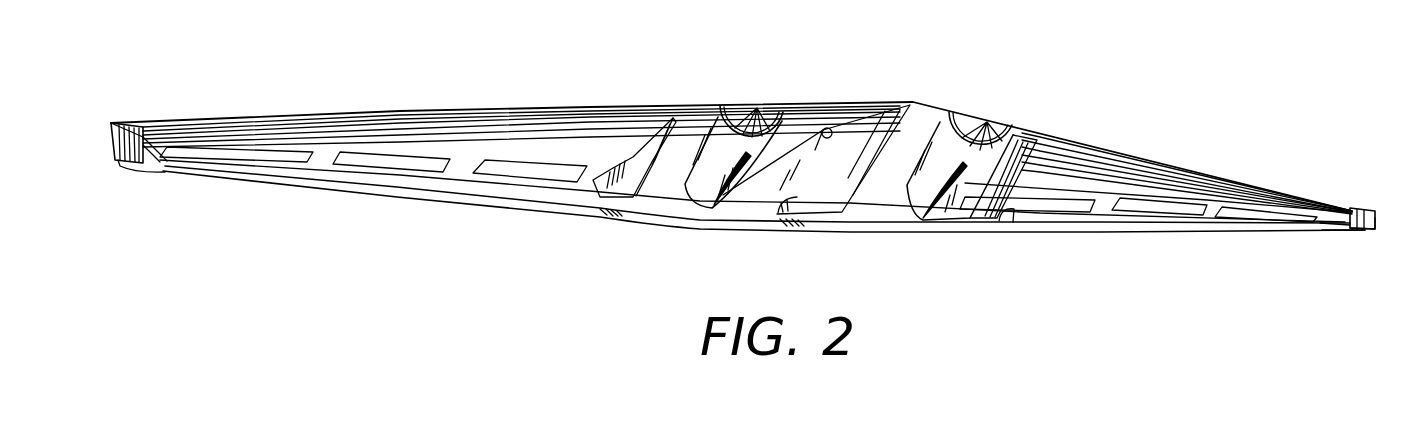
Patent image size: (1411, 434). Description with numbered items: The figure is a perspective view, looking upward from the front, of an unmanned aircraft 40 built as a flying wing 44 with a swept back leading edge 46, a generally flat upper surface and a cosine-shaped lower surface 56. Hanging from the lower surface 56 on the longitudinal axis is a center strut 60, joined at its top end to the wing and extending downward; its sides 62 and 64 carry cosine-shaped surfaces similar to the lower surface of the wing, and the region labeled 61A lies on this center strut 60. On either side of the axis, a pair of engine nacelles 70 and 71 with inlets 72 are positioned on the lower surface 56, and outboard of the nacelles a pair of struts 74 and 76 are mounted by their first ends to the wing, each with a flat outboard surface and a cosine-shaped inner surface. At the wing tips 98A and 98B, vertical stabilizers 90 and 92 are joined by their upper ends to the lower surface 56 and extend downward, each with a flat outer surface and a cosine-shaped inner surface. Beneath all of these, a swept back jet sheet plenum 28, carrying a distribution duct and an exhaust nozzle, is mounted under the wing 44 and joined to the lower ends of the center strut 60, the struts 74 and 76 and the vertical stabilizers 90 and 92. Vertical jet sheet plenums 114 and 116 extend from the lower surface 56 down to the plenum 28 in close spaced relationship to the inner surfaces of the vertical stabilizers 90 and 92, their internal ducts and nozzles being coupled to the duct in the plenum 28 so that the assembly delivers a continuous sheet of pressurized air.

The unmanned aircraft 40 is at (1063, 48).
The swept back jet sheet plenum 28 is at (358, 190).
The flying wing 44 is at (401, 113).
The swept back leading edge 46 is at (535, 110).
The lower surface 56 is at (290, 127).
The center strut 60 is at (790, 205).
The aperture 61A is at (828, 128).
The side of center strut 62 is at (877, 107).
The side of center strut 64 is at (936, 117).
The engine nacelle 70 is at (712, 127).
The engine nacelle 71 is at (992, 130).
The inlet 72 is at (762, 110).
The strut 74 is at (625, 193).
The strut 76 is at (1003, 214).
The vertical stabilizer 90 is at (112, 160).
The vertical stabilizer 92 is at (1374, 222).
The wing tip 98A is at (120, 124).
The wing tip 98B is at (1360, 208).
The vertical jet sheet plenum 114 is at (153, 160).
The vertical jet sheet plenum 116 is at (1337, 227).